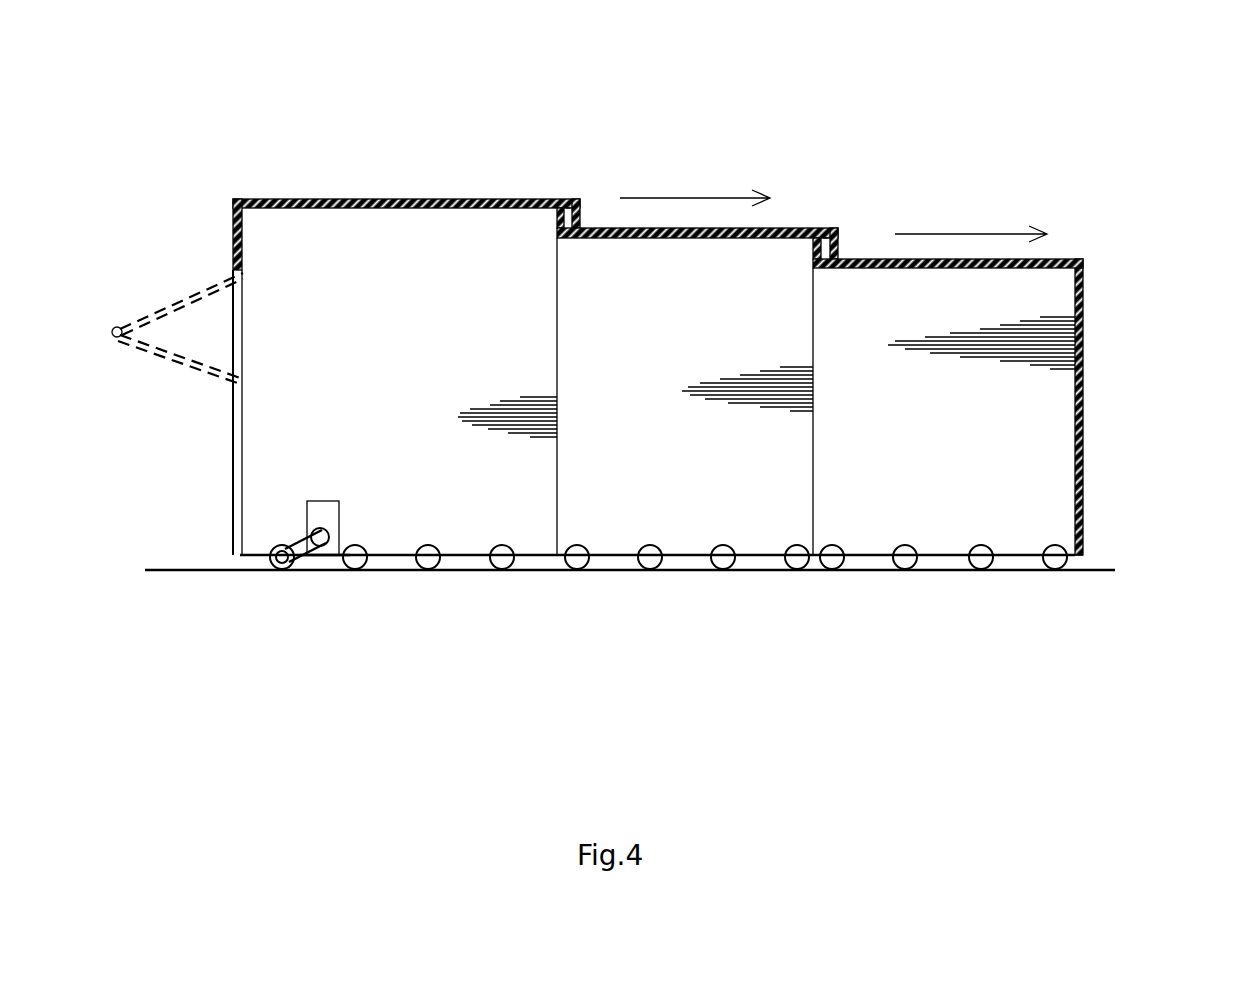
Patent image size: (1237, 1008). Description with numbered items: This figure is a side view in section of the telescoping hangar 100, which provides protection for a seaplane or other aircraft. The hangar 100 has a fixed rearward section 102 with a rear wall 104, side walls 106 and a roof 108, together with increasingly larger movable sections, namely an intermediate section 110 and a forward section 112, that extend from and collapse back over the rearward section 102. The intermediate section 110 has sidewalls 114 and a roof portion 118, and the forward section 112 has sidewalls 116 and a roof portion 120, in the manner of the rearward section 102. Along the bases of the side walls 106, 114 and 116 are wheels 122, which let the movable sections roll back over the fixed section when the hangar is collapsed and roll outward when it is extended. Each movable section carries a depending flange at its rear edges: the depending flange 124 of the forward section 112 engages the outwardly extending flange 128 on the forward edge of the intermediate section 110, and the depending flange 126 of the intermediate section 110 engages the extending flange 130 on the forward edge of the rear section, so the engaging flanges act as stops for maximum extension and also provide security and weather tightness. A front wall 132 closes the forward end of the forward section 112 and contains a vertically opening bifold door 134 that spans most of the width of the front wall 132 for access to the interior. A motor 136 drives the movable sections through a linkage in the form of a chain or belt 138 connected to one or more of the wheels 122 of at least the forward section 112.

The telescoping hangar 100 is at (932, 122).
The rearward section 102 is at (1013, 553).
The rear wall 104 is at (1083, 345).
The side walls 106 is at (980, 457).
The roof 108 is at (978, 268).
The intermediate section 110 is at (700, 565).
The forward section 112 is at (392, 560).
The sidewalls 114 is at (722, 457).
The sidewalls 116 is at (398, 377).
The roof portion 118 is at (672, 238).
The roof portion 120 is at (390, 208).
The wheels 122 is at (650, 566).
The depending flange 124 is at (580, 208).
The depending flange 126 is at (838, 237).
The extending flange 128 is at (560, 222).
The extending flange 130 is at (813, 255).
The front wall 132 is at (233, 490).
The door 134 is at (165, 360).
The motor 136 is at (340, 525).
The chain or belt 138 is at (268, 562).